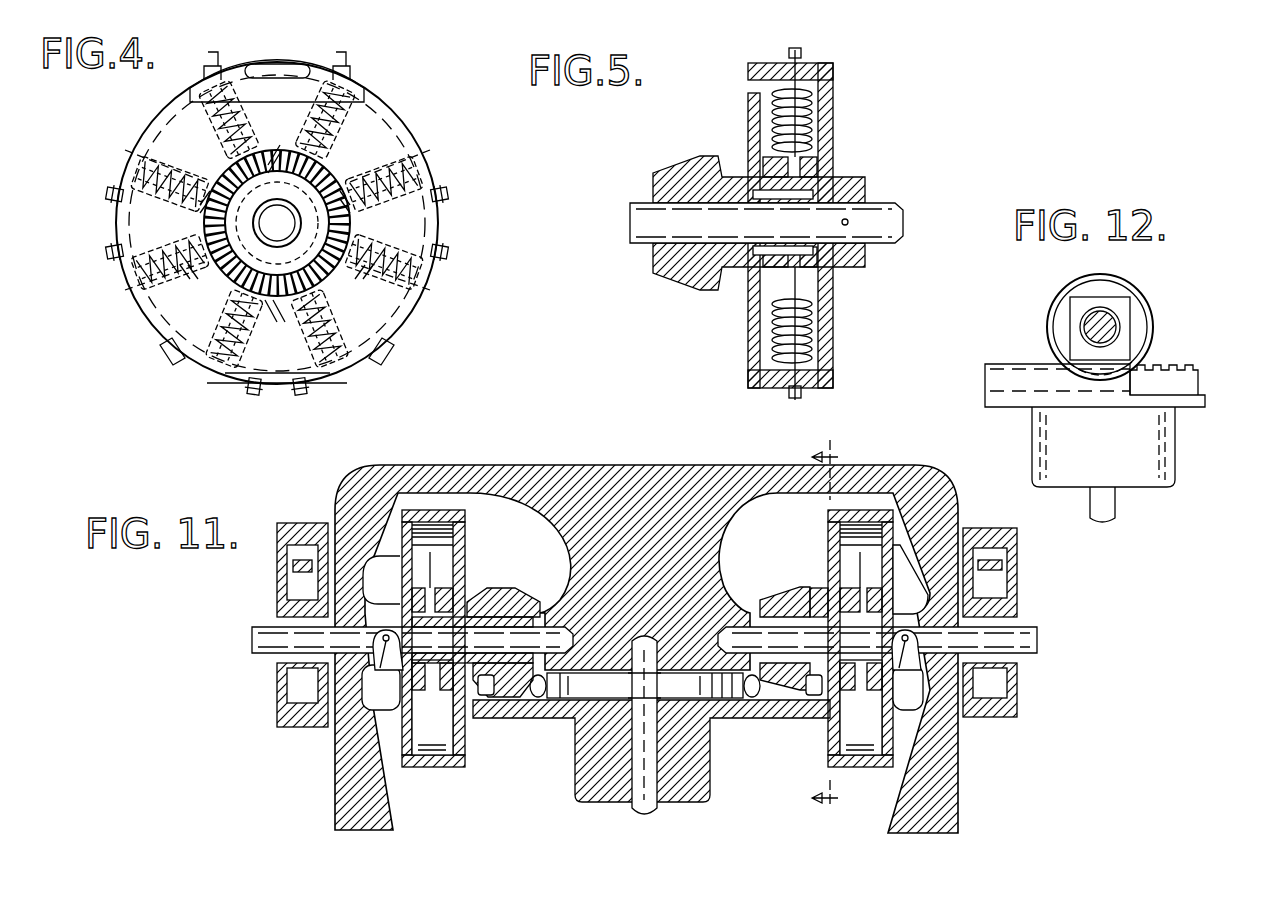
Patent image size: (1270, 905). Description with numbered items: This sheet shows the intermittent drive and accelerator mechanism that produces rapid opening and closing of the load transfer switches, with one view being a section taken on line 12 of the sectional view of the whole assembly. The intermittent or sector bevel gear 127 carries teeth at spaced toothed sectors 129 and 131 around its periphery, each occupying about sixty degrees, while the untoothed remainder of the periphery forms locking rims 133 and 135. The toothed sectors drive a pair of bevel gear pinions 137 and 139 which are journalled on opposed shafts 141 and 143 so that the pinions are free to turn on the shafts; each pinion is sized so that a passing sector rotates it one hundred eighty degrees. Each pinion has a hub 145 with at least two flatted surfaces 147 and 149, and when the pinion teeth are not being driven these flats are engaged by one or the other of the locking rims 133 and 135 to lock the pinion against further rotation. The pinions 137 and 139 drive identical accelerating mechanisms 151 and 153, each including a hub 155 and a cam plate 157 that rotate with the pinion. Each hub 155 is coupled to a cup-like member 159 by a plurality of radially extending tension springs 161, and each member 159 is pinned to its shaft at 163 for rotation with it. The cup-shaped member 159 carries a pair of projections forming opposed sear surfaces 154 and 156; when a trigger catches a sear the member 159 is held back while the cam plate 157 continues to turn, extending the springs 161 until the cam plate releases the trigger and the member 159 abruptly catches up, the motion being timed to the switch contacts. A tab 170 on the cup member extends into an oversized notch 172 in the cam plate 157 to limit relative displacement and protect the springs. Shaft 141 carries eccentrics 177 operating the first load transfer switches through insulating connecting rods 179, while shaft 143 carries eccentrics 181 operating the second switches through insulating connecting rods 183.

In FIG. 11, the section line 12— 12 is at (840, 619).
In FIG. 12, the sector bevel gear 127 is at (1032, 442).
In FIG. 11, the sector bevel gear 127 is at (580, 790).
In FIG. 11, the toothed sector 129 is at (538, 697).
In FIG. 12, the toothed sector 131 is at (1205, 372).
In FIG. 11, the toothed sector 131 is at (752, 697).
In FIG. 11, the locking rim 133 is at (645, 686).
In FIG. 12, the locking rim 135 is at (1020, 362).
In FIG. 11, the bevel gear pinion 137 is at (518, 592).
In FIG. 4, the bevel gear pinion 139 is at (205, 228).
In FIG. 5, the bevel gear pinion 139 is at (680, 283).
In FIG. 11, the bevel gear pinion 139 is at (786, 598).
In FIG. 11, the shaft 141 is at (412, 634).
In FIG. 5, the shaft 143 is at (900, 214).
In FIG. 12, the shaft 143 is at (1100, 306).
In FIG. 11, the shaft 143 is at (877, 634).
In FIG. 12, the hub 145 is at (1130, 318).
In FIG. 12, the flatted surface 147 is at (1118, 295).
In FIG. 11, the flatted surface 147 is at (495, 592).
In FIG. 12, the flatted surface 149 is at (1135, 368).
In FIG. 11, the flatted surface 149 is at (486, 697).
In FIG. 11, the accelerating mechanism 151 is at (473, 532).
In FIG. 5, the accelerating mechanism 153 is at (717, 79).
In FIG. 11, the accelerating mechanism 153 is at (818, 542).
In FIG. 4, the sear surface 154 is at (167, 358).
In FIG. 5, the hub 155 is at (812, 270).
In FIG. 11, the hub 155 is at (438, 588).
In FIG. 4, the sear surface 156 is at (388, 358).
In FIG. 4, the cam plate 157 is at (343, 148).
In FIG. 5, the cam plate 157 is at (748, 118).
In FIG. 11, the cam plate 157 is at (465, 548).
In FIG. 4, the cup-like member 159 is at (355, 72).
In FIG. 5, the cup-like member 159 is at (835, 82).
In FIG. 11, the cup-like member 159 is at (645, 627).
In FIG. 4, the tension spring 161 is at (395, 182).
In FIG. 5, the tension spring 161 is at (812, 112).
In FIG. 11, the pin 163 is at (652, 668).
In FIG. 4, the tab 170 is at (285, 66).
In FIG. 5, the tab 170 is at (745, 80).
In FIG. 4, the notch 172 is at (382, 70).
In FIG. 11, the eccentric 177 is at (277, 575).
In FIG. 11, the insulating connecting rod 179 is at (277, 710).
In FIG. 11, the eccentric 181 is at (1017, 578).
In FIG. 11, the insulating connecting rod 183 is at (1017, 700).